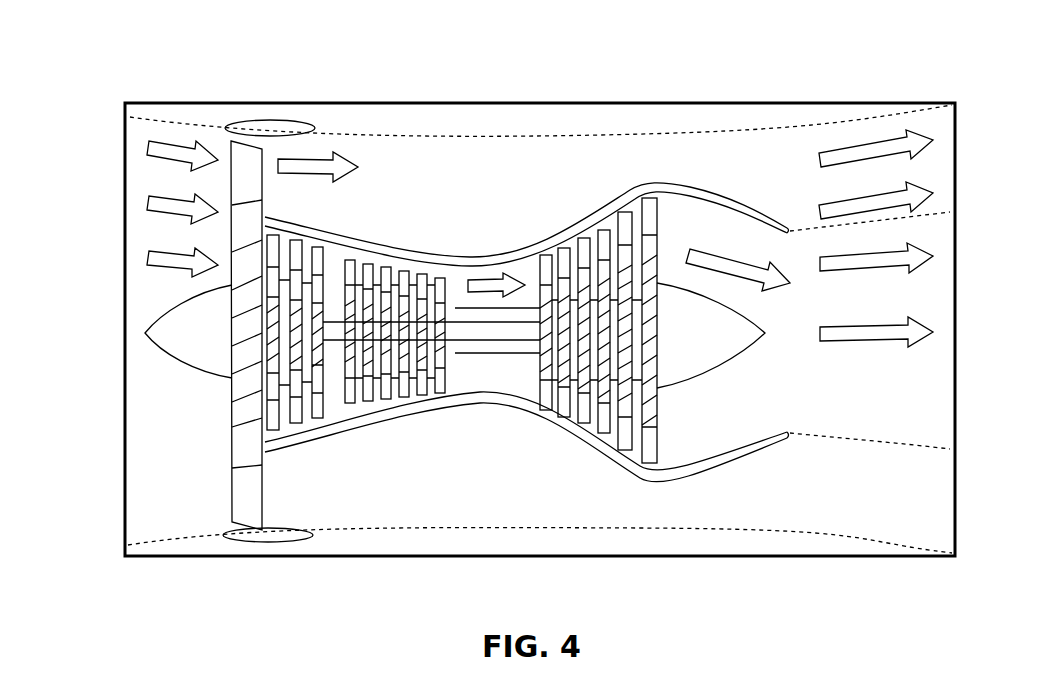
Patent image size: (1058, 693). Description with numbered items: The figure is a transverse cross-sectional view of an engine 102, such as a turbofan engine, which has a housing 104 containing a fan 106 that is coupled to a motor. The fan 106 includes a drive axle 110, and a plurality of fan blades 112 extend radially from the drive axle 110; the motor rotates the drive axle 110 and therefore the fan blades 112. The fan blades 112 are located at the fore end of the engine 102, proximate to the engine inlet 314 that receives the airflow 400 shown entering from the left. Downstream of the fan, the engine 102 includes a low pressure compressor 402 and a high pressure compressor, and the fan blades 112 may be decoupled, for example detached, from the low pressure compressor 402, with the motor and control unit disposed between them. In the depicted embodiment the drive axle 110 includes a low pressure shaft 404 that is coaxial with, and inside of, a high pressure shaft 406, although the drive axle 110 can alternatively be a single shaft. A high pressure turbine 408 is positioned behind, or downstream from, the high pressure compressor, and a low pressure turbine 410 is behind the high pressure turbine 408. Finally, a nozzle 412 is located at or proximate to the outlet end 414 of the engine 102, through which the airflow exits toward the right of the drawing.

The engine 102 is at (462, 128).
The housing 104 is at (270, 120).
The fan 106 is at (230, 183).
The drive axle 110 is at (333, 330).
The fan blades 112 is at (243, 227).
The engine inlet 314 is at (207, 402).
The airflow 400 is at (172, 148).
The low pressure compressor 402 is at (295, 410).
The low pressure shaft 404 is at (383, 277).
The high pressure shaft 406 is at (485, 307).
The high pressure turbine 408 is at (545, 267).
The low pressure turbine 410 is at (627, 433).
The nozzle 412 is at (725, 410).
The outlet end 414 is at (785, 255).